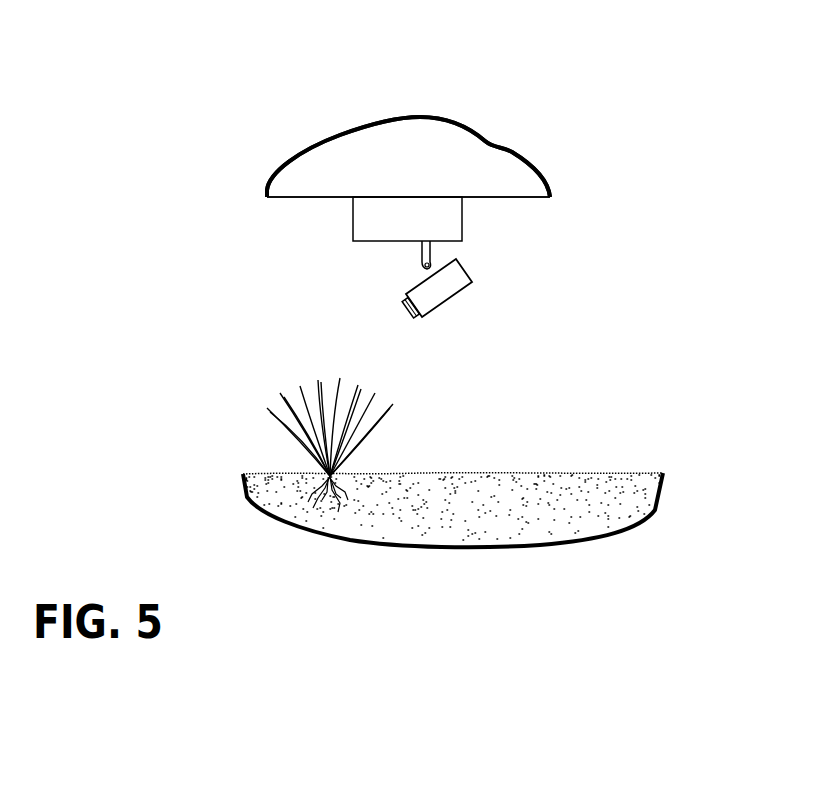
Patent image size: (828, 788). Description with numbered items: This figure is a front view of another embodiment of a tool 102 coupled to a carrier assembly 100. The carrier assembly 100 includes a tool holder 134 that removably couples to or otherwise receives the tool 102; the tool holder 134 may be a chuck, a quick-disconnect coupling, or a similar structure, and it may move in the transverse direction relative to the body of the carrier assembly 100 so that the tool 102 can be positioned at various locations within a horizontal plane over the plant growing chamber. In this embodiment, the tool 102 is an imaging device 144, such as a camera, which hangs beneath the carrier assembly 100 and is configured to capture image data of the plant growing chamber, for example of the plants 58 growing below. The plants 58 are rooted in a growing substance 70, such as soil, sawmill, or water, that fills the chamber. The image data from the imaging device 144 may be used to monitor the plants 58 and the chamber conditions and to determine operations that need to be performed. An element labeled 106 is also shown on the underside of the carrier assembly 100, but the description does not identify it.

The carrier assembly 100 is at (556, 167).
The tool 102 is at (207, 196).
The canopy underside 106 is at (520, 197).
The tool holder 134 is at (353, 217).
The imaging device 144 is at (443, 300).
The plants 58 is at (262, 457).
The growing substance 70 is at (603, 477).